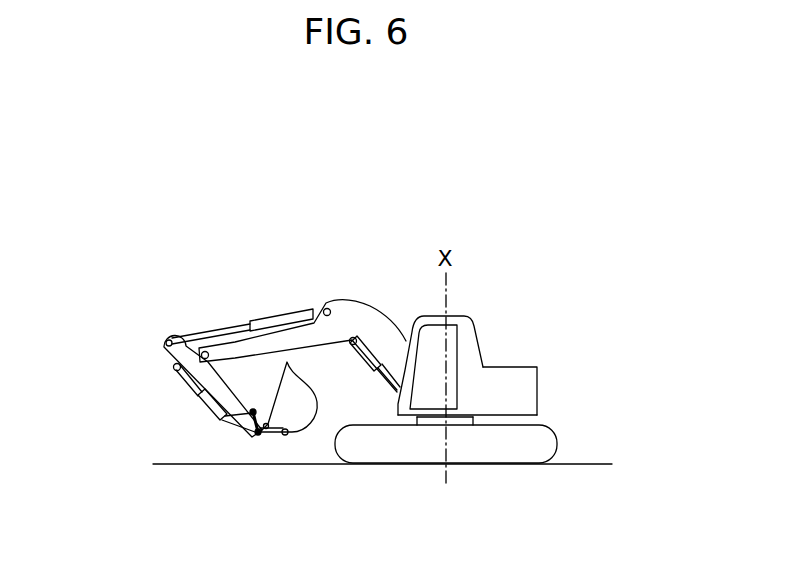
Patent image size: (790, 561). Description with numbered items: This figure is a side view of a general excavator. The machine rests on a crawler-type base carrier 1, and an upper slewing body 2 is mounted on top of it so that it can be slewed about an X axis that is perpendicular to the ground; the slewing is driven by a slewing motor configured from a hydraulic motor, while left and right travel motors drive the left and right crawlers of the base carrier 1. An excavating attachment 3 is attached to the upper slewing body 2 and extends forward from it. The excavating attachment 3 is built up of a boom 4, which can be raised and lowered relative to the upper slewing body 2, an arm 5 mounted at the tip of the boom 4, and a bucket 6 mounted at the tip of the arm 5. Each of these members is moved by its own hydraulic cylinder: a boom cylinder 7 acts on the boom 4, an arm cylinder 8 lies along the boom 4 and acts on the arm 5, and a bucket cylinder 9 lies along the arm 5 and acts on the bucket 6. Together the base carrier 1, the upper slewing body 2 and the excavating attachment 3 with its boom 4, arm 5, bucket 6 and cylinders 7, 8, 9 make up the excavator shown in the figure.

The base carrier 1 is at (470, 466).
The upper slewing body 2 is at (484, 314).
The excavating attachment 3 is at (229, 322).
The boom 4 is at (372, 308).
The arm 5 is at (194, 389).
The bucket 6 is at (306, 432).
The boom cylinder 7 is at (376, 377).
The arm cylinder 8 is at (272, 315).
The bucket cylinder 9 is at (212, 405).